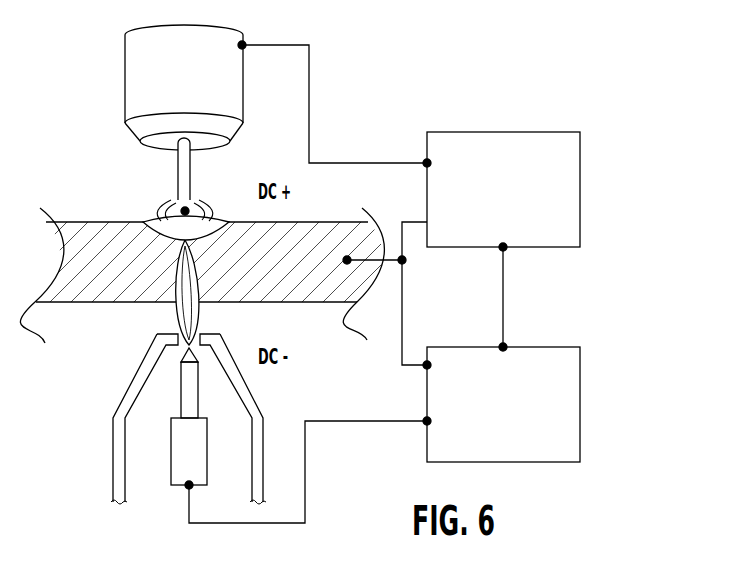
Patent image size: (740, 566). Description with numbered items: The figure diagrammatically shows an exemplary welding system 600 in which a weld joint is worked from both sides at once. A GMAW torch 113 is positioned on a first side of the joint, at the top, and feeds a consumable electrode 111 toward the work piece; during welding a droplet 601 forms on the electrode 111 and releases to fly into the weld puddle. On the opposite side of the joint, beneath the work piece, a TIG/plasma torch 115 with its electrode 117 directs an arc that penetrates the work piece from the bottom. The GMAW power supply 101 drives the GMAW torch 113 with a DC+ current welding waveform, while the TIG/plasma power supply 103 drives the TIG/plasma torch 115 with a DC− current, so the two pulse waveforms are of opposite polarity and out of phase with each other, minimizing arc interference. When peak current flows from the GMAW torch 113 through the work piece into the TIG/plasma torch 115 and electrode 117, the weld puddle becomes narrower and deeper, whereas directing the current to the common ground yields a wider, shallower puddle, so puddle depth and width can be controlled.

The welding system 600 is at (352, 135).
The GMAW torch 113 is at (142, 65).
The electrode 111 is at (180, 168).
The droplet 601 is at (175, 205).
The plasma/TIG torch electrode 117 is at (182, 383).
The TIG/plasma torch 115 is at (171, 458).
The GMAW power supply 101 is at (580, 193).
The TIG/plasma power supply 103 is at (580, 412).